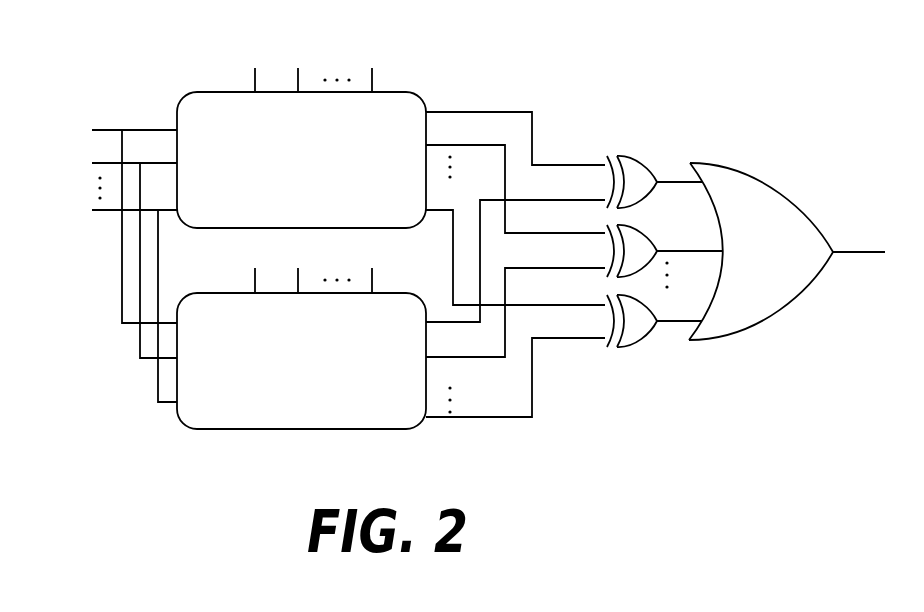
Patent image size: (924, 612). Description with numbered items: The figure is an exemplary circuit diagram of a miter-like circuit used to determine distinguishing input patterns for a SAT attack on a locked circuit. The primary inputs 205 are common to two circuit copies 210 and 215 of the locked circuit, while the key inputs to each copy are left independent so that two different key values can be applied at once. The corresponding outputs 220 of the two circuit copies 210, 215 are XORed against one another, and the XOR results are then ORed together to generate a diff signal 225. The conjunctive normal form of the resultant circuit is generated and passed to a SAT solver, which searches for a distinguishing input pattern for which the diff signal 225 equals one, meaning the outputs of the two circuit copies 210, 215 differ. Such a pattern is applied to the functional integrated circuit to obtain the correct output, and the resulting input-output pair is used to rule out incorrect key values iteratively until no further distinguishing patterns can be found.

The primary inputs 205 is at (110, 128).
The circuit copy 210 is at (400, 102).
The circuit copy 215 is at (220, 420).
The outputs 220 is at (492, 210).
The diff signal 225 is at (748, 207).